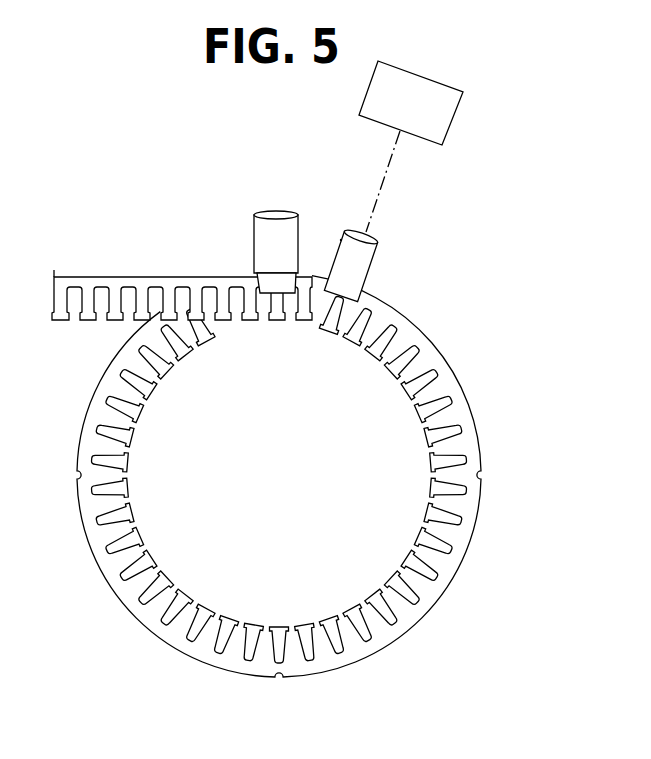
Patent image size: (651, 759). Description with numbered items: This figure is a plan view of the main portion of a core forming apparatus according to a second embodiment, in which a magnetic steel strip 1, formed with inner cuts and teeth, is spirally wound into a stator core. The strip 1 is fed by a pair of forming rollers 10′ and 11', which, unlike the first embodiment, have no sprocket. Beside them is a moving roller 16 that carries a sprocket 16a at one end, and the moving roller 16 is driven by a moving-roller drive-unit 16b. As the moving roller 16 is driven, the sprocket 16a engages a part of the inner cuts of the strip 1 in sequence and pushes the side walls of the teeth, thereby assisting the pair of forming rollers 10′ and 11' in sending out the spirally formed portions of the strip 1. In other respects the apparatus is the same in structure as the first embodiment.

The magnetic steel strip 1 is at (115, 277).
The forming roller 10′ is at (262, 216).
The forming roller 11' is at (321, 189).
The moving roller 16 is at (370, 237).
The sprocket 16a is at (365, 322).
The moving-roller drive-unit 16b is at (455, 128).